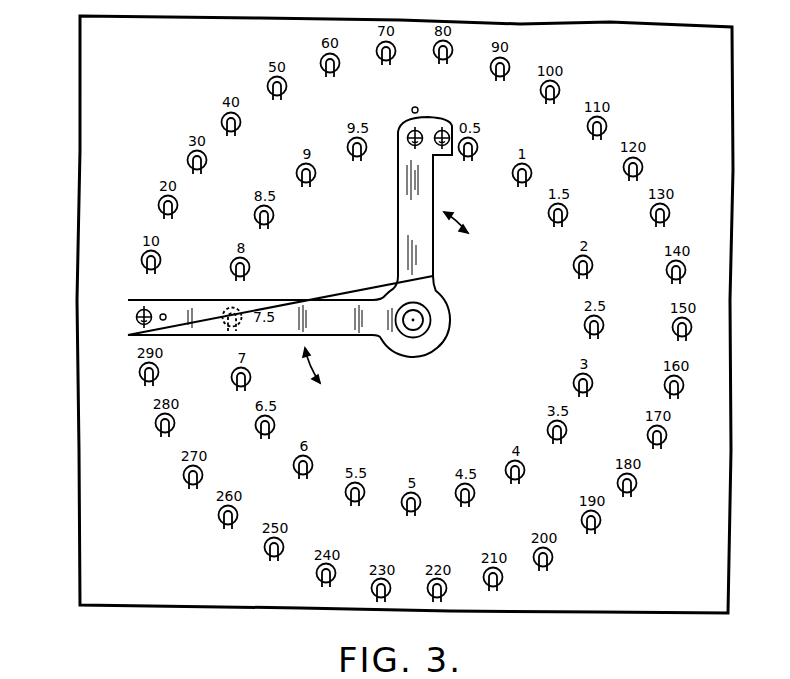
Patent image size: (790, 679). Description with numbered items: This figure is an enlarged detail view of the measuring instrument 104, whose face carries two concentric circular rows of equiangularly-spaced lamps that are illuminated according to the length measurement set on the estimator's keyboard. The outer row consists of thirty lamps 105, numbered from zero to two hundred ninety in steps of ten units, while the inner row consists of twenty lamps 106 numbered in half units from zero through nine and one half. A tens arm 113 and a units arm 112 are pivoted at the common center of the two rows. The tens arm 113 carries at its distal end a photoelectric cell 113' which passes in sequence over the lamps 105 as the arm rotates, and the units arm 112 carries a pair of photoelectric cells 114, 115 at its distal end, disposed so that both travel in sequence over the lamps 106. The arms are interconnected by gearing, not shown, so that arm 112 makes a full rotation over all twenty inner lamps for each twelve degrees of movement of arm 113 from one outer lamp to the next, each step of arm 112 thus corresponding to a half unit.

The measuring instrument 104 is at (78, 83).
The lamps of outer row 105 is at (178, 207).
The lamps of inner row 106 is at (575, 258).
The units arm 112 is at (404, 244).
The tens arm 113 is at (289, 316).
The photoelectric cell 113' is at (167, 303).
The photoelectric cell 114 is at (407, 132).
The photoelectric cell 115 is at (452, 128).